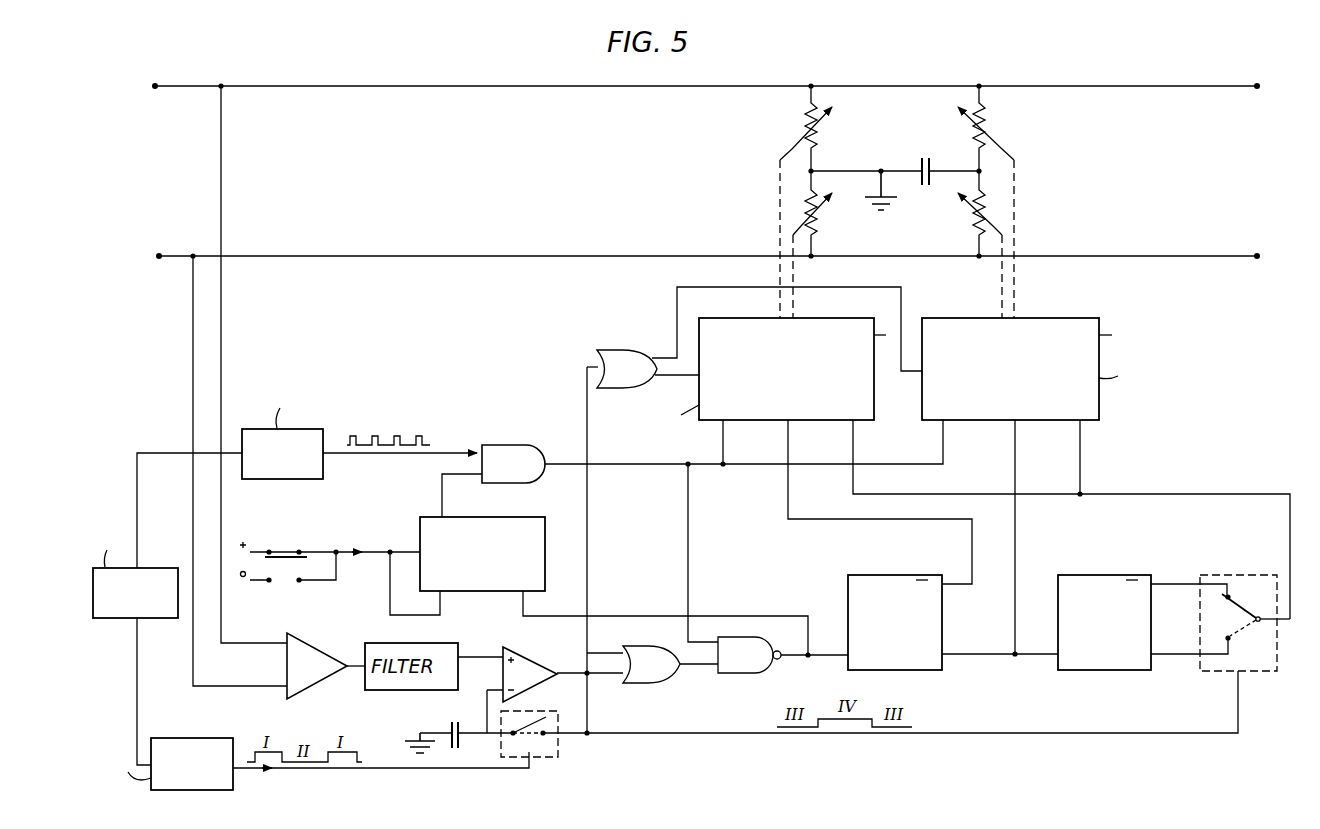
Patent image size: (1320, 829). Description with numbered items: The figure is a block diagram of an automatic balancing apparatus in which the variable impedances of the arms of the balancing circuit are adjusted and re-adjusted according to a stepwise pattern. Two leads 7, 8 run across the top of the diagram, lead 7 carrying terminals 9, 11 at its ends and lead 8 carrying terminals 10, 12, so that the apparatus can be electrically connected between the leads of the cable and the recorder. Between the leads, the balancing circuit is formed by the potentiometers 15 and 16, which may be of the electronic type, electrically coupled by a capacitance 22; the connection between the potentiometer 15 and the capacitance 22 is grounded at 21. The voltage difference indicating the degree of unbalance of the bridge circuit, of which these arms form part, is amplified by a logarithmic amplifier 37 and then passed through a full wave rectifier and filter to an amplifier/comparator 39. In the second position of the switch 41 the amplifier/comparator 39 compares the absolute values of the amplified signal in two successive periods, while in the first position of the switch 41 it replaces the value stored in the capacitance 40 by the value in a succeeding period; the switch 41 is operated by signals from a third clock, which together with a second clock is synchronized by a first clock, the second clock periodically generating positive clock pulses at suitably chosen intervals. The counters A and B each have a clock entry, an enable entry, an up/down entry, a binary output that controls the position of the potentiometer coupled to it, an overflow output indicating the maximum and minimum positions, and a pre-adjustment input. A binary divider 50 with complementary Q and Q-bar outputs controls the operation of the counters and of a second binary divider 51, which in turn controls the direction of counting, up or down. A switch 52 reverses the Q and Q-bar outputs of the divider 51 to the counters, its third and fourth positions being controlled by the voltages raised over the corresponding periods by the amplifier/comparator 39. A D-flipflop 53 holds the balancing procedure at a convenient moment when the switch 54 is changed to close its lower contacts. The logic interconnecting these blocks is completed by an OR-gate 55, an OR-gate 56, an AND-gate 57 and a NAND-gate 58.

The lead 7 is at (451, 88).
The lead 8 is at (516, 254).
The terminal 9 is at (155, 84).
The terminal 10 is at (159, 254).
The terminal 11 is at (1257, 89).
The terminal 12 is at (1257, 259).
The potentiometer 15 is at (752, 176).
The potentiometer 16 is at (1040, 160).
The ground 21 is at (885, 203).
The capacitance 22 is at (920, 160).
The logarithmic amplifier 37 is at (315, 644).
The amplifier/comparator 39 is at (546, 649).
The capacitance 40 is at (450, 726).
The switch 41 is at (553, 758).
The binary divider 50 is at (942, 622).
The binary divider 51 is at (1108, 575).
The switch 52 is at (1215, 672).
The D-flipflop 53 is at (420, 518).
The switch 54 is at (286, 546).
The OR-gate 55 is at (622, 348).
The OR-gate 56 is at (650, 683).
The AND-gate 57 is at (516, 445).
The NAND-gate 58 is at (749, 674).